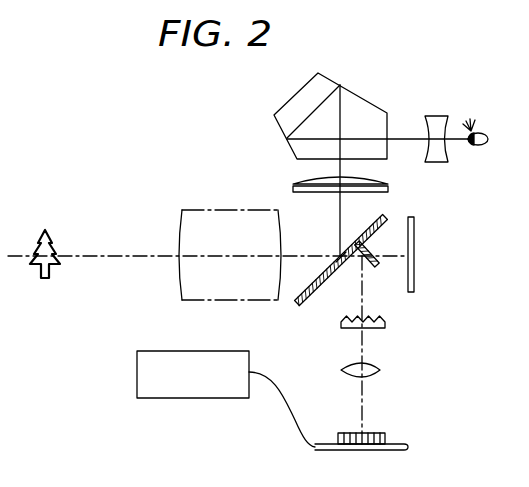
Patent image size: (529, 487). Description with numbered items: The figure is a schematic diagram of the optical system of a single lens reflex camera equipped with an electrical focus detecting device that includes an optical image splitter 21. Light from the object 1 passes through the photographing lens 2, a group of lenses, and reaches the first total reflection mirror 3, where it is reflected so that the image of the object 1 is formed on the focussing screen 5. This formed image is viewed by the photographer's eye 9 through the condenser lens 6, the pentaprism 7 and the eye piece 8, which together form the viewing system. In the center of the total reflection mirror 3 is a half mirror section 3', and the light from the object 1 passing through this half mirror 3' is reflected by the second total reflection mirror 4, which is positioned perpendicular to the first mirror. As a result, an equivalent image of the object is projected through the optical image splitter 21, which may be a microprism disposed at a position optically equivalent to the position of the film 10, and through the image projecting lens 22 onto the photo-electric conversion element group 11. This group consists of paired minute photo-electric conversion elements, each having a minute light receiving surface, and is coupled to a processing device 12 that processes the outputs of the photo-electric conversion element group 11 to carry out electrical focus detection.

The object 1 is at (47, 236).
The photographing lens 2 is at (212, 220).
The first total reflection mirror 3 is at (347, 274).
The half mirror section 3' is at (347, 277).
The second total reflection mirror 4 is at (376, 265).
The focussing screen 5 is at (386, 193).
The condenser lens 6 is at (372, 183).
The pentaprism 7 is at (365, 108).
The eye piece 8 is at (440, 117).
The photographer's eye 9 is at (486, 131).
The film 10 is at (416, 238).
The photo-electric conversion element group 11 is at (404, 446).
The processing device 12 is at (172, 360).
The optical image splitter 21 is at (388, 322).
The image projecting lens 22 is at (379, 369).